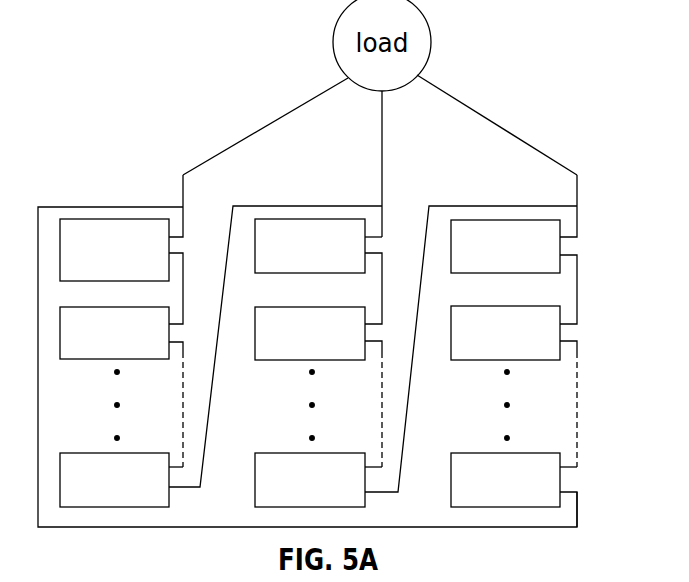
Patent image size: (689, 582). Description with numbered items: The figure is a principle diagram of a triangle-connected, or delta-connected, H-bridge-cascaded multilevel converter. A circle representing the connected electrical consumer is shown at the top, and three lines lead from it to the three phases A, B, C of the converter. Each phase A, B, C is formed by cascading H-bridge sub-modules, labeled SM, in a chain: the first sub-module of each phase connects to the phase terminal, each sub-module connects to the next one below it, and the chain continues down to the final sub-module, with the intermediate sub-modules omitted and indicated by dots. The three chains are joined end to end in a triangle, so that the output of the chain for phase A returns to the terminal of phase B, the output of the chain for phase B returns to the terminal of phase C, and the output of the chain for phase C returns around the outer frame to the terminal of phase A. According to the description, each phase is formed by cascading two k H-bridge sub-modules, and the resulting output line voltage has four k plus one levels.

The phase A arm of submodules A is at (221, 339).
The phase B arm of submodules B is at (416, 339).
The phase C arm of submodules C is at (514, 348).